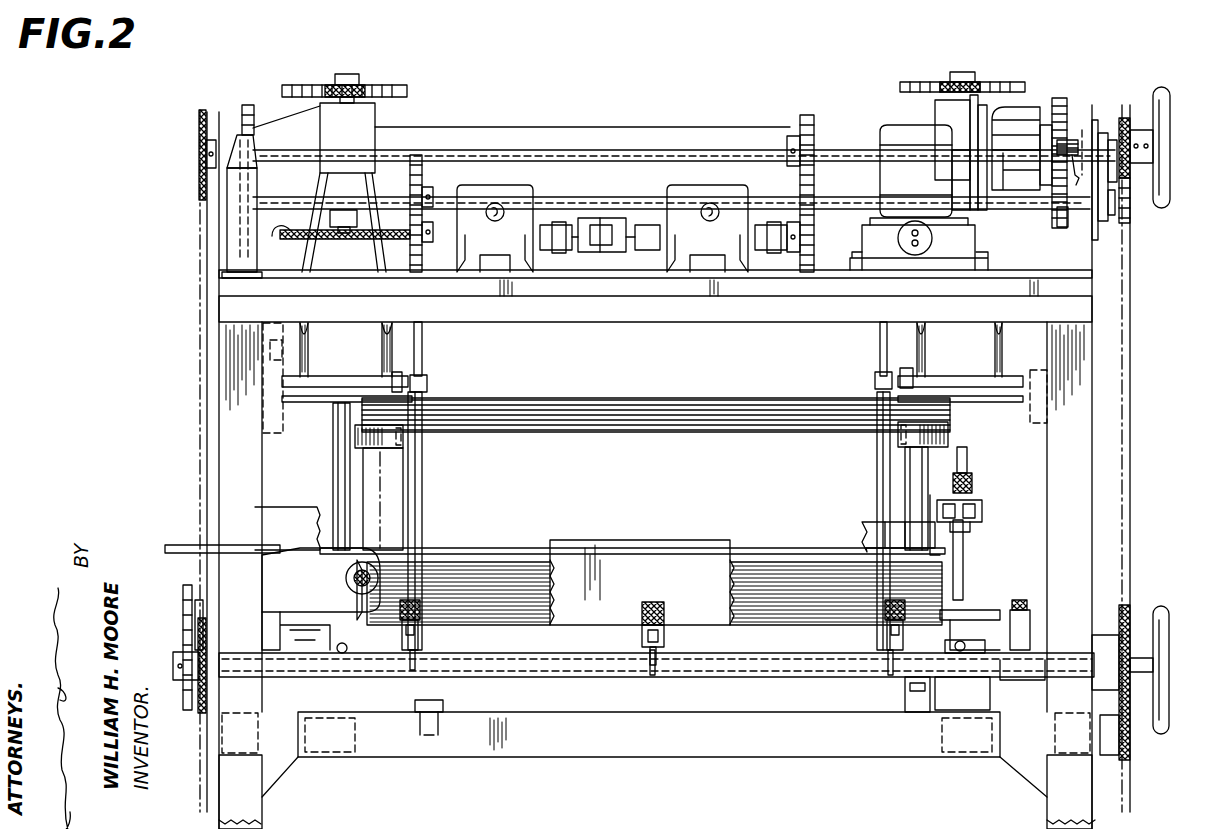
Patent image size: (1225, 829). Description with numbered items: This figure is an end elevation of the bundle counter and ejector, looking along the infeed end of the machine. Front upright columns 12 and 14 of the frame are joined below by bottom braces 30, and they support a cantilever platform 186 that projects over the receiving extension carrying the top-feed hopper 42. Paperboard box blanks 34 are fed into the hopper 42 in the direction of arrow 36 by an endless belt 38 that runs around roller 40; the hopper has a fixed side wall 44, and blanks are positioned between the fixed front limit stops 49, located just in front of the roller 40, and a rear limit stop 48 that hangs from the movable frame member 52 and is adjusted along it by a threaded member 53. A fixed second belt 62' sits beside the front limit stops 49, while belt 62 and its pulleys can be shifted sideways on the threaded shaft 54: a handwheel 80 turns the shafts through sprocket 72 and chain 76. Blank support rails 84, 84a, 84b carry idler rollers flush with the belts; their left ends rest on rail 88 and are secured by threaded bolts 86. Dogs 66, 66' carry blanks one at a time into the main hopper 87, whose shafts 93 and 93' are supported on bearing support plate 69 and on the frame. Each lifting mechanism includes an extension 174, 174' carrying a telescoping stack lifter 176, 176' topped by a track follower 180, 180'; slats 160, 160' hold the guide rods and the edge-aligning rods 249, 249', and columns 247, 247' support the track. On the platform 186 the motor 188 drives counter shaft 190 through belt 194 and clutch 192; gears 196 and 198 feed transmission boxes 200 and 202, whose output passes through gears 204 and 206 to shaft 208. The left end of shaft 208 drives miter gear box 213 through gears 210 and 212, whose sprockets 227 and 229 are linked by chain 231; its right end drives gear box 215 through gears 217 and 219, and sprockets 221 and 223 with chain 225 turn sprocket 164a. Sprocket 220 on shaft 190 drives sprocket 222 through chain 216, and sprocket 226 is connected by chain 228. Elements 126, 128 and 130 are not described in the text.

The front upright column 12 is at (228, 441).
The front upright column 14 is at (1078, 453).
The bottom brace 30 is at (648, 745).
The paperboard box blank 34 is at (442, 548).
The arrow 36 is at (160, 540).
The endless belt 38 is at (175, 553).
The roller 40 is at (345, 585).
The top-feed hopper 42 is at (690, 540).
The fixed side wall 44 is at (642, 582).
The limit stop 48 is at (935, 535).
The front limit stop 49 is at (365, 568).
The movable frame member 52 is at (975, 500).
The threaded member 53 is at (966, 473).
The threaded shaft 54 is at (756, 660).
The belt 62 is at (904, 713).
The second belt 62' is at (419, 724).
The dog 66 is at (866, 626).
The dog 66' is at (437, 626).
The bearing support plate 69 is at (972, 690).
The sprocket 72 is at (1130, 648).
The chain 76 is at (1131, 400).
The handwheel 80 is at (1169, 680).
The blank support rail 84 is at (420, 655).
The blank support rail 84a is at (652, 660).
The blank support rail 84b is at (888, 655).
The threaded bolt 86 is at (654, 602).
The main hopper 87 is at (657, 376).
The rail 88 is at (550, 676).
The shaft 93 is at (972, 614).
The shaft 93' is at (308, 673).
The knurled shaft 126 is at (1127, 118).
The hand wheel 128 is at (1170, 192).
The hub 130 is at (1125, 270).
The slat 160 is at (959, 429).
The slat 160' is at (345, 432).
The sprocket 164a is at (336, 242).
The extension 174 is at (859, 355).
The extension 174' is at (449, 357).
The stack lifter 176 is at (852, 521).
The stack lifter 176' is at (451, 521).
The track follower 180 is at (972, 373).
The track follower 180' is at (337, 378).
The cantilever platform 186 is at (1085, 305).
The motor 188 is at (905, 112).
The counter shaft 190 is at (840, 150).
The clutch 192 is at (1018, 108).
The belt 194 is at (992, 105).
The gear 196 is at (806, 115).
The gear 198 is at (830, 243).
The change gear transmission box 200 is at (695, 192).
The second change gear transmission box 202 is at (508, 192).
The gear 204 is at (410, 278).
The gear 206 is at (418, 155).
The shaft 208 is at (300, 206).
The gear 210 is at (240, 240).
The gear 212 is at (248, 105).
The vertical right angle miter gear box 213 is at (300, 141).
The gear box 215 is at (962, 102).
The chain 216 is at (204, 348).
The gear 217 is at (1062, 228).
The gear 219 is at (1062, 125).
The sprocket 220 is at (198, 145).
The sprocket 221 is at (965, 82).
The sprocket 222 is at (200, 714).
The sprocket 223 is at (902, 82).
The chain 225 is at (976, 95).
The sprocket 226 is at (178, 658).
The sprocket 227 is at (345, 74).
The chain 228 is at (183, 630).
The sprocket 229 is at (395, 84).
The chain 231 is at (318, 84).
The column 247 is at (983, 560).
The column 247' is at (337, 499).
The rod 249 is at (874, 496).
The rod 249' is at (420, 476).